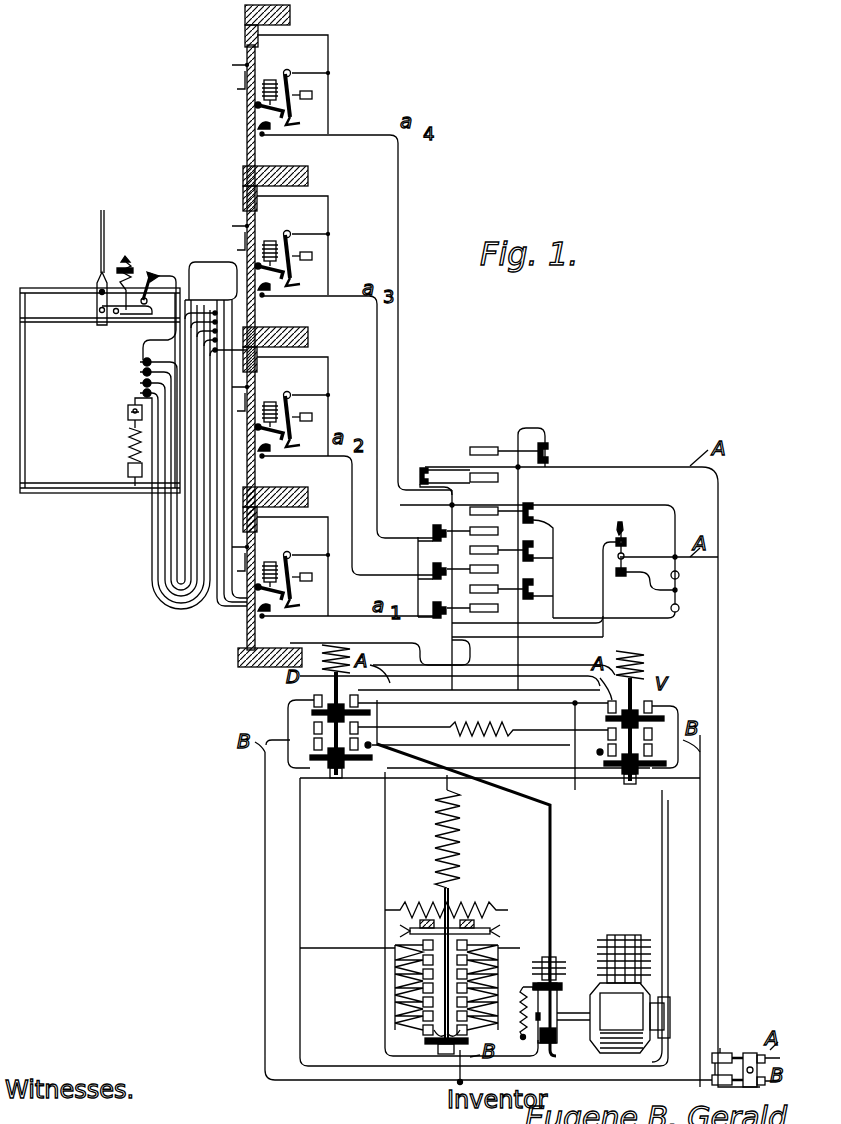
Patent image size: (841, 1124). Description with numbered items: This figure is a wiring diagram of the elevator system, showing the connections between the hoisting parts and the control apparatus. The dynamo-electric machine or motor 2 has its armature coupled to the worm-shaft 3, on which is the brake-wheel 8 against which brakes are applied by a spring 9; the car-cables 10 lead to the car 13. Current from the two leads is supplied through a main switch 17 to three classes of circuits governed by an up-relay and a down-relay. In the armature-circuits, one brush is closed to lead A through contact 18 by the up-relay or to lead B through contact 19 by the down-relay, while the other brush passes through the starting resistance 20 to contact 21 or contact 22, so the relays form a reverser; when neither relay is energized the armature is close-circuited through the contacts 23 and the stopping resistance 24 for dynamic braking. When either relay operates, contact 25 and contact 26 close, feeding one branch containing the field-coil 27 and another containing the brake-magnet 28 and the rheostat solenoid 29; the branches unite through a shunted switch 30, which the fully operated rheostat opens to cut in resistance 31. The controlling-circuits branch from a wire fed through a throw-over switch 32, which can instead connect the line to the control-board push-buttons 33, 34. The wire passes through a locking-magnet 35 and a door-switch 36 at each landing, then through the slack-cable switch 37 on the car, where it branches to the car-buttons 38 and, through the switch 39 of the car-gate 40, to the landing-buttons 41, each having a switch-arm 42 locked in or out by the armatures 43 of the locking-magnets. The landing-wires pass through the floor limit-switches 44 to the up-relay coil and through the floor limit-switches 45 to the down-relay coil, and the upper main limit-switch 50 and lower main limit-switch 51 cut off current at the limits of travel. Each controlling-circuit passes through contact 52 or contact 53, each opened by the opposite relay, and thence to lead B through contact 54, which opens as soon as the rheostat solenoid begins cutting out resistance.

The dynamo-electric machine or motor 2 is at (605, 1040).
The worm-shaft 3 is at (580, 1012).
The brake-wheel 8 is at (545, 1043).
The spring 9 is at (519, 1025).
The car-cables 10 is at (100, 222).
The car 13 is at (82, 290).
The main switch 17 is at (748, 1053).
The contact 18 is at (655, 706).
The contact 19 is at (466, 900).
The starting resistance 20 is at (410, 998).
The contact 21 is at (600, 752).
The contact 22 is at (288, 707).
The contacts 23 is at (365, 724).
The stopping resistance 24 is at (481, 710).
The contact 25 is at (595, 706).
The contact 26 is at (370, 746).
The field-coil 27 is at (605, 935).
The brake-magnet 28 is at (540, 965).
The solenoid of the rheostat 29 is at (460, 855).
The shunted switch 30 is at (400, 932).
The resistance 31 is at (418, 905).
The throw-over switch 32 is at (628, 540).
The push-button of the control-board 33 is at (691, 575).
The push-button of the control-board 34 is at (632, 610).
The locking-magnet 35 is at (278, 80).
The door-switch 36 is at (262, 70).
The slack-cable switch 37 is at (158, 278).
The car-buttons 38 is at (140, 362).
The switch of the car-gate 39 is at (128, 412).
The car-gate 40 is at (128, 434).
The landing-buttons 41 is at (311, 328).
The switch-arm 42 is at (293, 354).
The armatures of the locking-magnets 43 is at (284, 130).
The floor limit-switches 44 is at (540, 514).
The floor limit-switches 45 is at (430, 530).
The upper main limit-switch 50 is at (548, 449).
The lower main limit-switch 51 is at (408, 466).
The contact 52 is at (312, 780).
The contact 53 is at (610, 778).
The contact 54 is at (425, 1050).